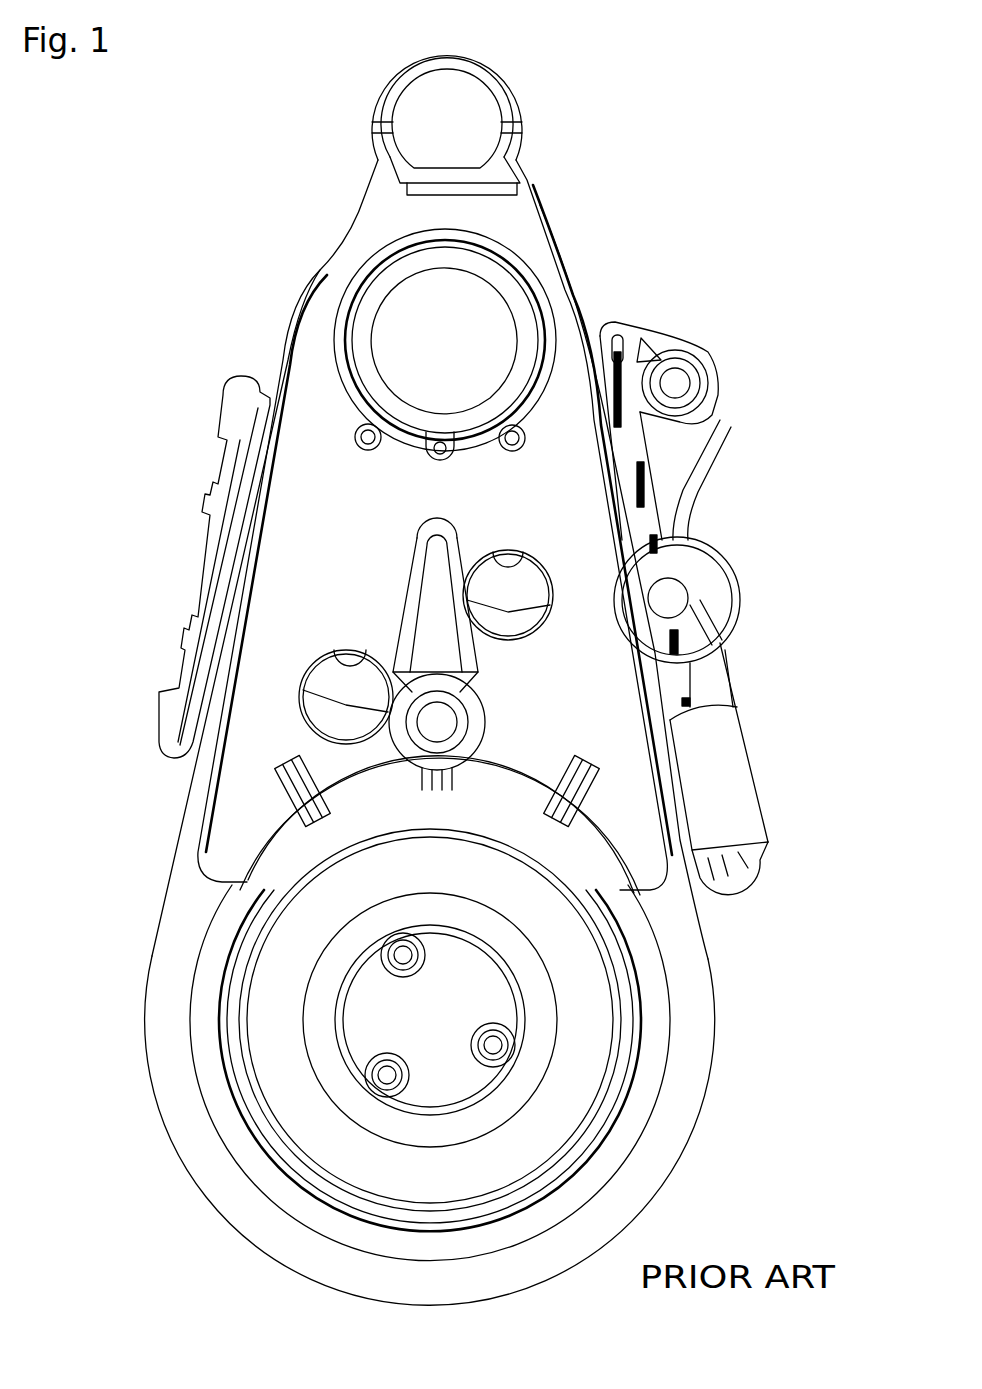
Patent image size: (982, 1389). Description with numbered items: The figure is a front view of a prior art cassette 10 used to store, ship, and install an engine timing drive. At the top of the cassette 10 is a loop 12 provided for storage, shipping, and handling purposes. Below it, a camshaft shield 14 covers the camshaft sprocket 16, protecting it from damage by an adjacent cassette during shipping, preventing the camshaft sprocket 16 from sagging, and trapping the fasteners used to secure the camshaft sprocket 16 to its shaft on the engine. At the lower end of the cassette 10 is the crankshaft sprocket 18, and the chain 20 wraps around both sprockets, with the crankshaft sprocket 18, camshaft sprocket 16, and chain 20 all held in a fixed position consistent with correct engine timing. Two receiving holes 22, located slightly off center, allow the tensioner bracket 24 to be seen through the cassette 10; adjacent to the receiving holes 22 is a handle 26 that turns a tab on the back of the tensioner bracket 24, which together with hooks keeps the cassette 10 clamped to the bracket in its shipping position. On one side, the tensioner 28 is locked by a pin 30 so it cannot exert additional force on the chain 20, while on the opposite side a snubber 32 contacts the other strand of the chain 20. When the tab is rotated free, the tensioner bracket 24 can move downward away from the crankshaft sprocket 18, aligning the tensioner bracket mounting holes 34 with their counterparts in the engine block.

The cassette 10 is at (348, 596).
The loop 12 is at (518, 99).
The camshaft shield 14 is at (288, 1070).
The camshaft sprocket 16 is at (223, 1027).
The crankshaft sprocket 18 is at (357, 310).
The chain 20 is at (205, 1162).
The receiving holes 22 is at (300, 667).
The tensioner bracket 24 is at (358, 701).
The handle 26 is at (437, 595).
The tensioner 28 is at (680, 438).
The pin 30 is at (737, 577).
The snubber 32 is at (175, 717).
The tensioner bracket mounting holes 34 is at (350, 655).